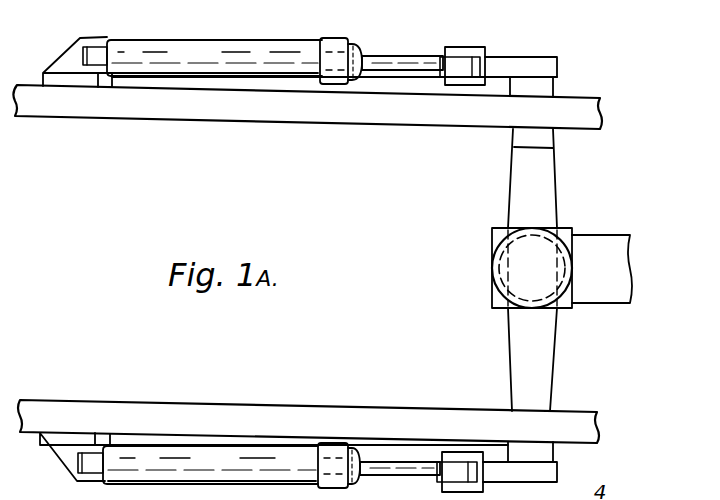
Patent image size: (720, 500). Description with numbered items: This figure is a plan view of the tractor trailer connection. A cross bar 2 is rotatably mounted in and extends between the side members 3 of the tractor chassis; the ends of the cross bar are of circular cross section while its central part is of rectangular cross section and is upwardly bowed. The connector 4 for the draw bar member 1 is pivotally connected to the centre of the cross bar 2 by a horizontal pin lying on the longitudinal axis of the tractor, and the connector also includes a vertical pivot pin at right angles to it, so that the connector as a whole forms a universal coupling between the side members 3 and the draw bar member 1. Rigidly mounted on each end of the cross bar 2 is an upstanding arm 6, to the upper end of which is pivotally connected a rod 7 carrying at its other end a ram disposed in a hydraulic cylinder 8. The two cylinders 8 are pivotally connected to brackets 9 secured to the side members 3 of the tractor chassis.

The draw bar member 1 is at (592, 272).
The cross bar 2 is at (522, 193).
The side members 3 is at (515, 114).
The connector 4 is at (513, 259).
The upstanding arm 6 is at (503, 70).
The rod 7 is at (400, 68).
The hydraulic cylinder 8 is at (233, 70).
The brackets 9 is at (92, 85).